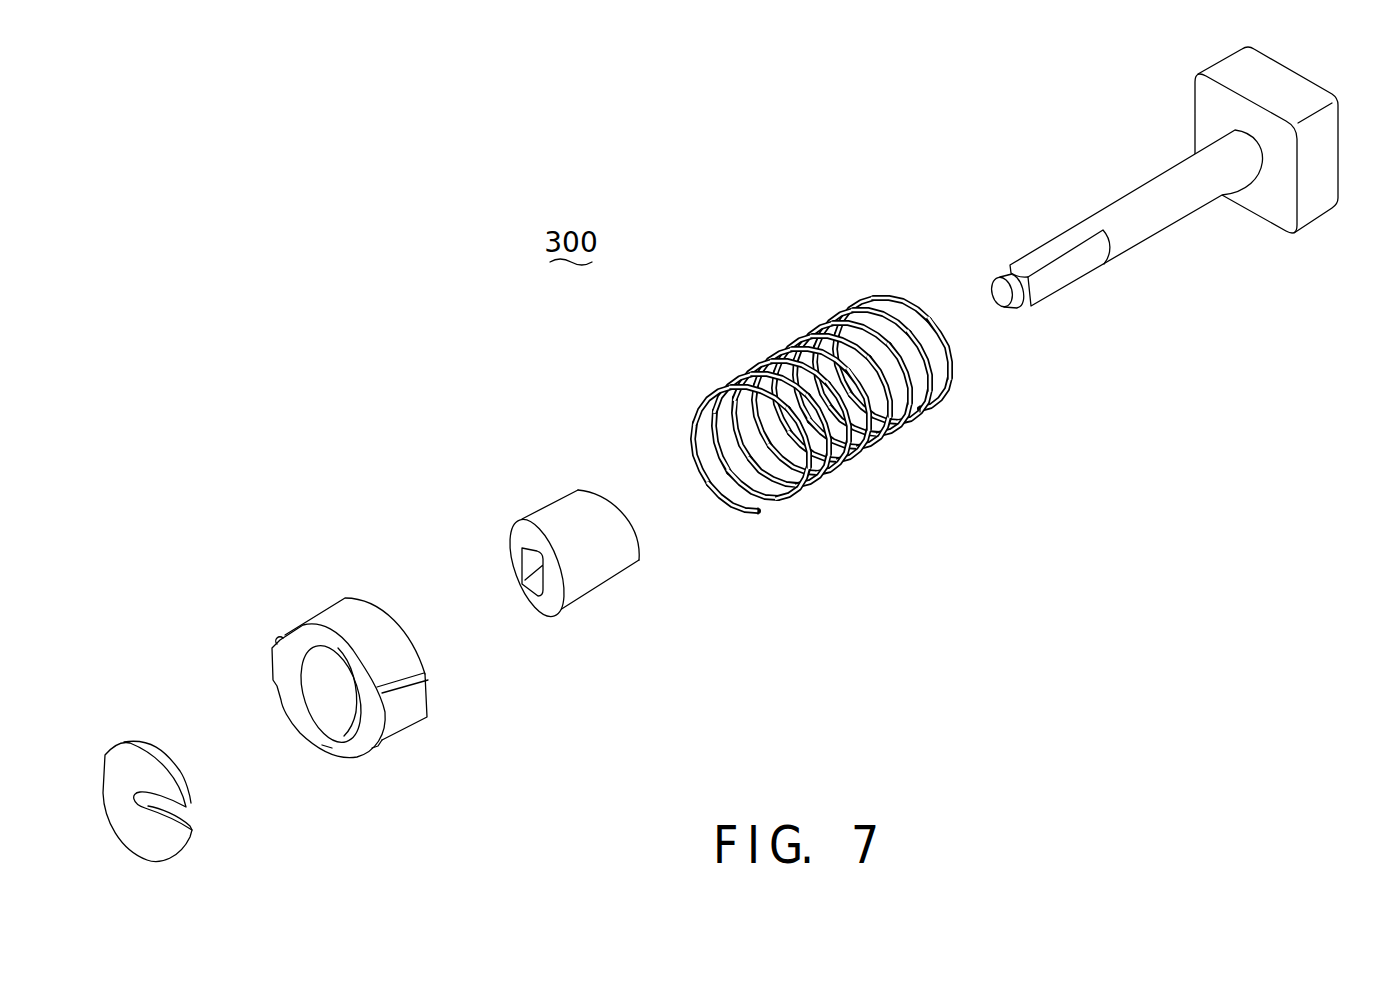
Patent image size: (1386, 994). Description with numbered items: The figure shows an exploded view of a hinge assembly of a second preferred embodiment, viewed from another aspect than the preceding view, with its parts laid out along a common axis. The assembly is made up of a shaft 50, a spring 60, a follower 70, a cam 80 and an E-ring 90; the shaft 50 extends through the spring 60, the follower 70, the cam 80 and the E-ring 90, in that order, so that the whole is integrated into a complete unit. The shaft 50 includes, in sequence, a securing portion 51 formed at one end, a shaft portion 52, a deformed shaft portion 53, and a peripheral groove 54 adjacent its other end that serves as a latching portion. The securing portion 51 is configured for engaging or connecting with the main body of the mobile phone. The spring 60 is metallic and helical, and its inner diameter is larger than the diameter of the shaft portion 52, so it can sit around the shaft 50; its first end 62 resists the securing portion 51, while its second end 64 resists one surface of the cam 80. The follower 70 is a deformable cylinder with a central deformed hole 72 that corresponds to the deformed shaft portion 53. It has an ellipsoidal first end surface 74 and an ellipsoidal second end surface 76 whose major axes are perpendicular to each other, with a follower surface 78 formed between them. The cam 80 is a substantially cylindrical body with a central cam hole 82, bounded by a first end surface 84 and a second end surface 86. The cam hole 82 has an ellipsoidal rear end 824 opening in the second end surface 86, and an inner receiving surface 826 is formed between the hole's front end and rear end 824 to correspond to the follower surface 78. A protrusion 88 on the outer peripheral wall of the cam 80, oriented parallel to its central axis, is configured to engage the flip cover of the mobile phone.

The shaft 50 is at (1185, 216).
The securing portion 51 is at (1313, 173).
The shaft portion 52 is at (1135, 205).
The deformed shaft portion 53 is at (1075, 263).
The peripheral groove 54 is at (1035, 290).
The spring 60 is at (822, 405).
The first end 62 is at (761, 508).
The second end 64 is at (933, 327).
The follower 70 is at (585, 566).
The central deformed hole 72 is at (530, 560).
The first end surface 74 is at (643, 535).
The second end surface 76 is at (532, 600).
The follower surface 78 is at (570, 515).
The cam 80 is at (337, 683).
The central cam hole 82 is at (320, 670).
The first end surface 84 is at (393, 620).
The second end surface 86 is at (360, 748).
The protrusion 88 is at (398, 713).
The rear end 824 is at (327, 747).
The inner receiving surface 826 is at (333, 703).
The E-ring 90 is at (135, 832).